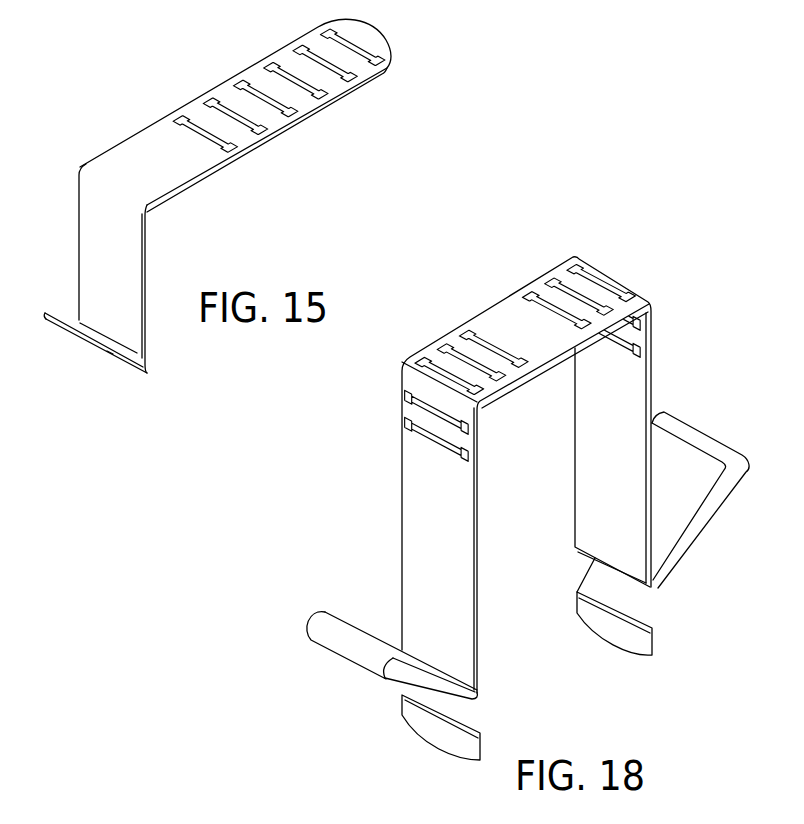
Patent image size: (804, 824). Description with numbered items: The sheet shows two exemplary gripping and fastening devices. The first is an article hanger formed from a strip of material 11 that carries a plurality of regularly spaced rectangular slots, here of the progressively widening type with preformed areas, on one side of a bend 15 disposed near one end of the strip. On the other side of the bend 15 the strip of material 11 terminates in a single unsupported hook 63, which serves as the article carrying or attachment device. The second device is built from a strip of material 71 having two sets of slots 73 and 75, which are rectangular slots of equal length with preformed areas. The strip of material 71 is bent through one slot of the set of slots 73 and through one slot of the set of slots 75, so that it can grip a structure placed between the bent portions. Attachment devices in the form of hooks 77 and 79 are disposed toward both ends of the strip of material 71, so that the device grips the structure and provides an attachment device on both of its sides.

In FIG. 15, the strip of material 11 is at (147, 183).
In FIG. 15, the bend 15 is at (93, 205).
In FIG. 15, the single unsupported hook 63 is at (113, 362).
In FIG. 18, the strip of material 71 is at (543, 337).
In FIG. 18, the set of slots 73 is at (455, 441).
In FIG. 18, the set of slots 75 is at (627, 350).
In FIG. 18, the hook 77 is at (325, 633).
In FIG. 18, the hook 79 is at (698, 438).